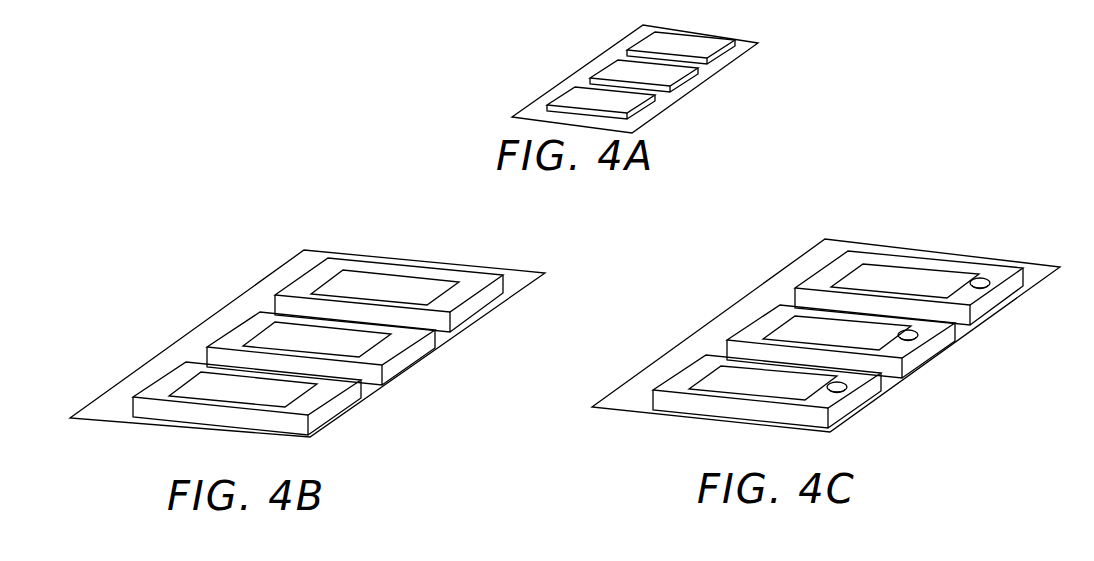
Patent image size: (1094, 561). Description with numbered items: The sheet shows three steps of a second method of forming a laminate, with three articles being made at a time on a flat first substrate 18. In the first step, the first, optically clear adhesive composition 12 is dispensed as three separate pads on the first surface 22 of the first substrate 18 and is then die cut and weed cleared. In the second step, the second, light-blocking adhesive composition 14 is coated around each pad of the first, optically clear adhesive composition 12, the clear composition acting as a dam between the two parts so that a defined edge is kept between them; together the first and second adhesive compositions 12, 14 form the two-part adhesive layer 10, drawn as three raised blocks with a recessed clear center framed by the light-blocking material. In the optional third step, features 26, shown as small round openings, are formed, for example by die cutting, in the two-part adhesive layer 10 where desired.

In FIG. 4B, the two-part adhesive layer 10 is at (278, 283).
In FIG. 4C, the two-part adhesive layer 10 is at (790, 277).
In FIG. 4A, the first, optically clear adhesive composition 12 is at (651, 45).
In FIG. 4B, the first, optically clear adhesive composition 12 is at (277, 387).
In FIG. 4B, the second, light-blocking adhesive composition 14 is at (462, 313).
In FIG. 4A, the first substrate 18 is at (743, 48).
In FIG. 4B, the first substrate 18 is at (523, 280).
In FIG. 4C, the first substrate 18 is at (1035, 272).
In FIG. 4A, the first surface 22 is at (533, 110).
In FIG. 4B, the first surface 22 is at (103, 390).
In FIG. 4C, the first surface 22 is at (623, 385).
In FIG. 4C, the features 26 is at (837, 383).